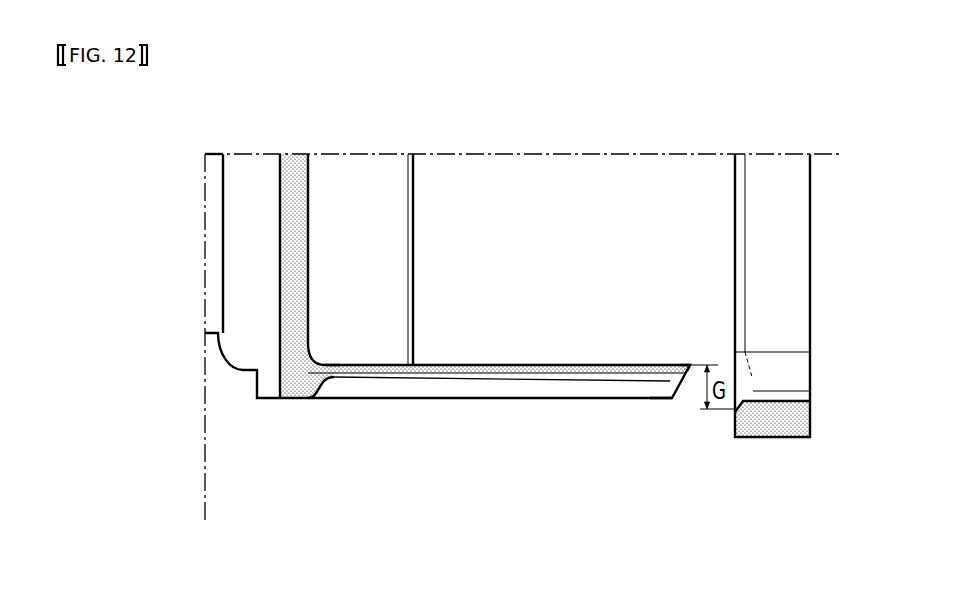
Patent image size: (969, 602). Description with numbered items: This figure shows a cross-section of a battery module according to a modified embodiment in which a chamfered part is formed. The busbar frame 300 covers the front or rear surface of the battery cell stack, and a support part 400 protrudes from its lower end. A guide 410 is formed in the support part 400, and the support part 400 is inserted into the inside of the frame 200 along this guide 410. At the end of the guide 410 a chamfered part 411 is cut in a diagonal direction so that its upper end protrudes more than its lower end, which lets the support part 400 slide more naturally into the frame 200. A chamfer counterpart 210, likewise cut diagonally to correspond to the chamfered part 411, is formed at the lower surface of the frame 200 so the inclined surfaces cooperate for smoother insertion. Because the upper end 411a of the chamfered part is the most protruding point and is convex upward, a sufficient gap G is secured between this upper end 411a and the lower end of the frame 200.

The frame 200 is at (787, 438).
The chamfer counterpart 210 is at (741, 412).
The busbar frame 300 is at (291, 165).
The support part 400 is at (375, 386).
The guide 410 is at (477, 375).
The chamfered part 411 is at (667, 383).
The upper end of the chamfered part 411a is at (690, 362).